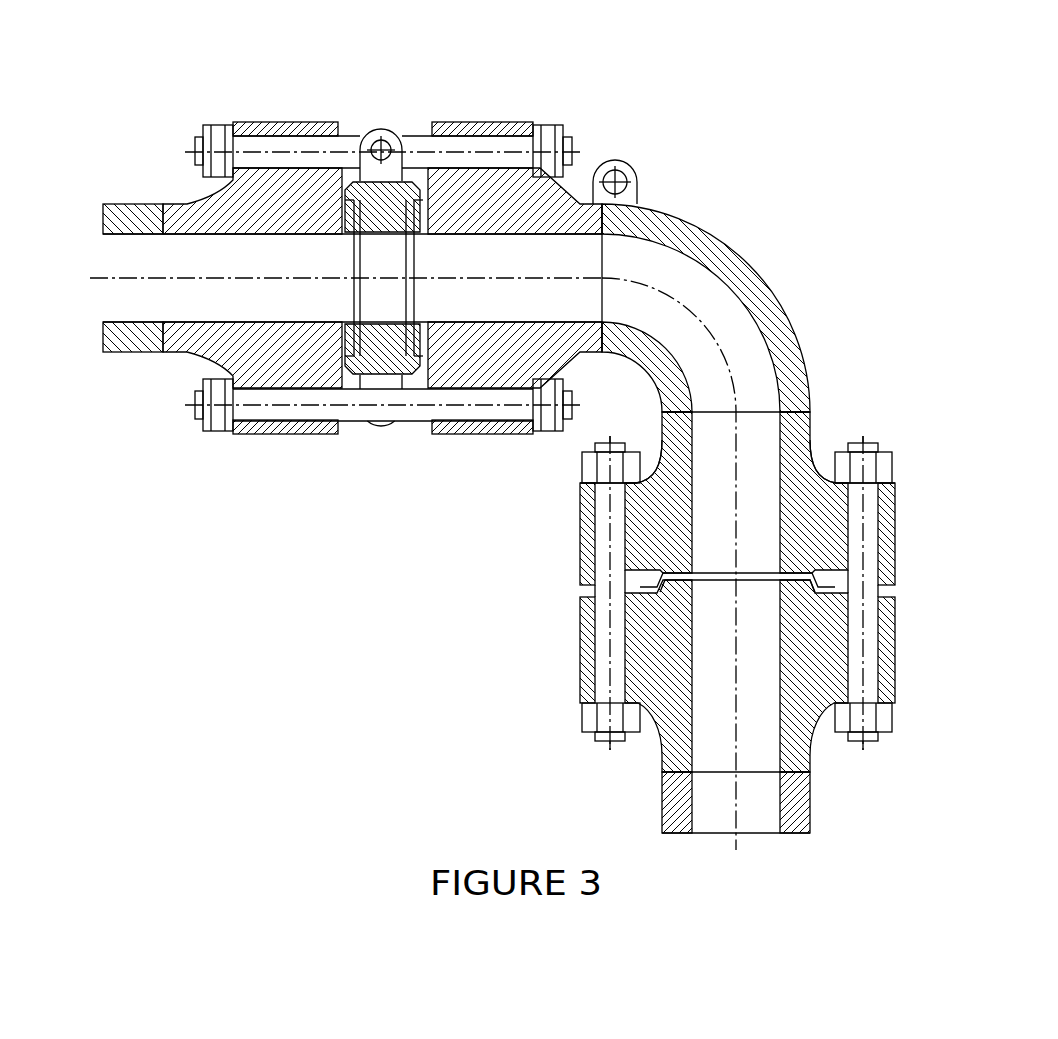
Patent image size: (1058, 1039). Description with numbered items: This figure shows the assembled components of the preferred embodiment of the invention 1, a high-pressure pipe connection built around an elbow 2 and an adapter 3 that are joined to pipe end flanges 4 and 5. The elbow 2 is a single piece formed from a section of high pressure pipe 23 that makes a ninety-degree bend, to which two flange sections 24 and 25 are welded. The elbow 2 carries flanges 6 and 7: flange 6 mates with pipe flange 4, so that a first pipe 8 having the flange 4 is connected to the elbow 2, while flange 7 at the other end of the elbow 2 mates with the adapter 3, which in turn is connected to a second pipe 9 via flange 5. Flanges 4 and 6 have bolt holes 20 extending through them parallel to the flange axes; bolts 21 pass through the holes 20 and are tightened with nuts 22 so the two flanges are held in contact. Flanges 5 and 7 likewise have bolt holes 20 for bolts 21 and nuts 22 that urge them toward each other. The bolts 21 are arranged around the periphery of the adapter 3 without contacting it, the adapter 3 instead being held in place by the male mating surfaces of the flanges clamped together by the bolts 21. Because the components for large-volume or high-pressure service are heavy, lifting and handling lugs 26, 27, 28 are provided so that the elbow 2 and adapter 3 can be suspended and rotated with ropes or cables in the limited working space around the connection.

The invention 1 is at (529, 453).
The elbow 2 is at (529, 477).
The adapter 3 is at (383, 244).
The pipe end flange 4 is at (529, 477).
The pipe end flange 5 is at (529, 444).
The flange 6 is at (529, 477).
The flange 7 is at (420, 197).
The first pipe 8 is at (529, 477).
The second pipe 9 is at (150, 353).
The bolt holes 20 is at (625, 543).
The bolts 21 is at (596, 447).
The nuts 22 is at (582, 718).
The high pressure pipe 23 is at (789, 370).
The flange section 24 is at (747, 439).
The flange section 25 is at (529, 458).
The lifting and handling lug 26 is at (654, 165).
The lifting and handling lug 27 is at (362, 128).
The lifting and handling lug 28 is at (378, 430).